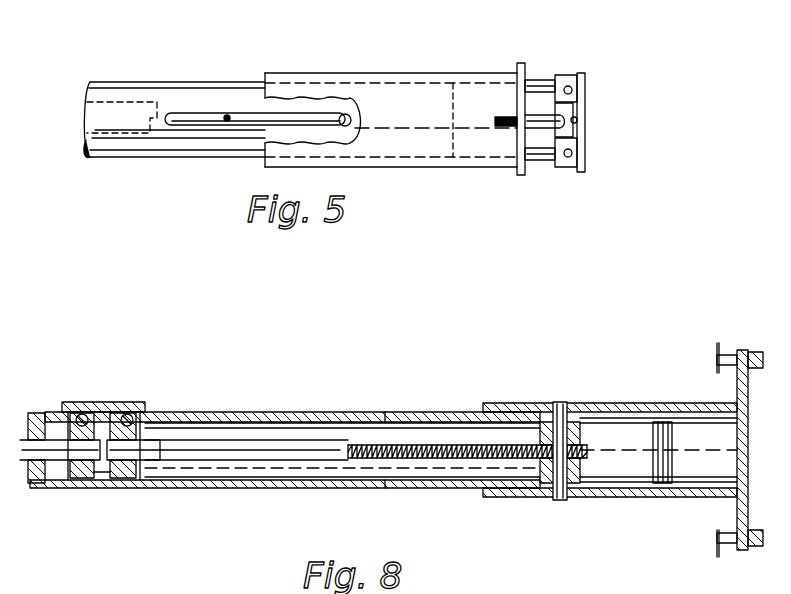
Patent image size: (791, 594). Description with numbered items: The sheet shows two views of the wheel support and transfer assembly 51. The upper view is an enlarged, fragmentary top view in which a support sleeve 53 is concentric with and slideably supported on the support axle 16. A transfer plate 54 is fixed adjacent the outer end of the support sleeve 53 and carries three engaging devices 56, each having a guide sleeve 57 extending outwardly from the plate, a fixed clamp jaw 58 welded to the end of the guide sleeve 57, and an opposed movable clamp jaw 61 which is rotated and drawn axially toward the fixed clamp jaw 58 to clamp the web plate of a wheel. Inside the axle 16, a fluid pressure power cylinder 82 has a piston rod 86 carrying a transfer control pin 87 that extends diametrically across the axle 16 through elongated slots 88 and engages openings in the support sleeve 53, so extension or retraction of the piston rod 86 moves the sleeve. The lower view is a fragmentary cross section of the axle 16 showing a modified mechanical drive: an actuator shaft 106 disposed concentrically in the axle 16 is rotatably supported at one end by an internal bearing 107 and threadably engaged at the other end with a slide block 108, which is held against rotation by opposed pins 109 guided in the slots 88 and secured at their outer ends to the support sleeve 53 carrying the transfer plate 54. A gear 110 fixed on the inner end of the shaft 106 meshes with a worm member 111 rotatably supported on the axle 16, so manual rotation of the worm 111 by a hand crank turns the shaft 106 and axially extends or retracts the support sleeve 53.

In FIG. 5, the support axle 16 is at (140, 82).
In FIG. 8, the support axle 16 is at (298, 483).
In FIG. 5, the fluid pressure power cylinder 82 is at (115, 118).
In FIG. 5, the piston rod 86 is at (198, 118).
In FIG. 5, the transfer control pin 87 is at (347, 112).
In FIG. 5, the elongated slots 88 is at (227, 116).
In FIG. 8, the elongated slots 88 is at (448, 418).
In FIG. 5, the support sleeve 53 is at (389, 75).
In FIG. 8, the support sleeve 53 is at (528, 403).
In FIG. 5, the transfer plate 54 is at (525, 70).
In FIG. 8, the transfer plate 54 is at (737, 392).
In FIG. 5, the engaging devices 56 is at (560, 71).
In FIG. 5, the guide sleeve 57 is at (535, 118).
In FIG. 5, the fixed clamp jaw 58 is at (567, 168).
In FIG. 5, the clamp jaw 61 is at (580, 90).
In FIG. 8, the wheel support and transfer assembly 51 is at (651, 500).
In FIG. 8, the actuator shaft 106 is at (288, 448).
In FIG. 8, the internal bearing 107 is at (162, 440).
In FIG. 8, the slide block 108 is at (575, 422).
In FIG. 8, the opposed pins 109 is at (560, 500).
In FIG. 8, the gear 110 is at (118, 470).
In FIG. 8, the worm member 111 is at (123, 418).